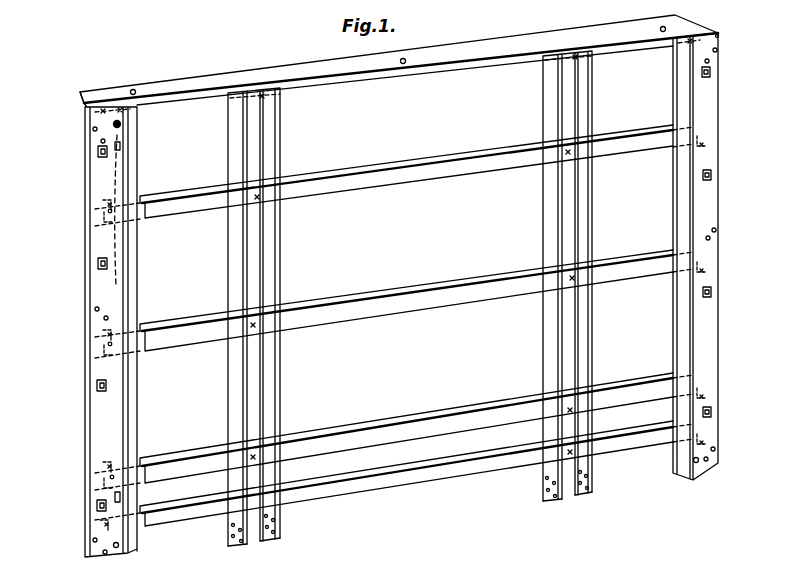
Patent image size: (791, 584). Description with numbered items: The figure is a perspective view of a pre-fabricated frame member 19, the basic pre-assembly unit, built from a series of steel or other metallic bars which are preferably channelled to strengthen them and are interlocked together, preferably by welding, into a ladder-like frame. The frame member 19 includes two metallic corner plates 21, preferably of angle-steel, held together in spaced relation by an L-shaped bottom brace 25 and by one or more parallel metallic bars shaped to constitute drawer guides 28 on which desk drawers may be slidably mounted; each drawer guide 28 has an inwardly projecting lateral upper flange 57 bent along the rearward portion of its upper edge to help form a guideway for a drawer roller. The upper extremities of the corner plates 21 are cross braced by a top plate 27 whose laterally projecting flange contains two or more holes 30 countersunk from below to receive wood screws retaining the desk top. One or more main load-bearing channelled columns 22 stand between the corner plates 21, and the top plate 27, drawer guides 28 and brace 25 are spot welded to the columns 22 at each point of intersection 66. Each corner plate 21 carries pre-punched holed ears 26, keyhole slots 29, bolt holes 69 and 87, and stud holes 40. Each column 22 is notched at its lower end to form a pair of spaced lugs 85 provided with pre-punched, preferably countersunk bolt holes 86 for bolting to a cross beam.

The pre-fabricated frame member 19 is at (159, 121).
The corner plate 21 is at (717, 213).
The channelled column 22 is at (263, 416).
The L-shaped bottom brace 25 is at (412, 480).
The pre-punched holed ear 26 is at (712, 75).
The top plate 27 is at (466, 44).
The drawer guide 28 is at (398, 182).
The keyhole slot 29 is at (120, 147).
The hole 30 is at (406, 58).
The stud hole 40 is at (106, 211).
The upper flange 57 is at (352, 170).
The point of intersection 66 is at (574, 54).
The bolt hole 69 is at (720, 35).
The lug 85 is at (232, 522).
The bolt hole 86 is at (268, 543).
The bolt hole 87 is at (710, 60).